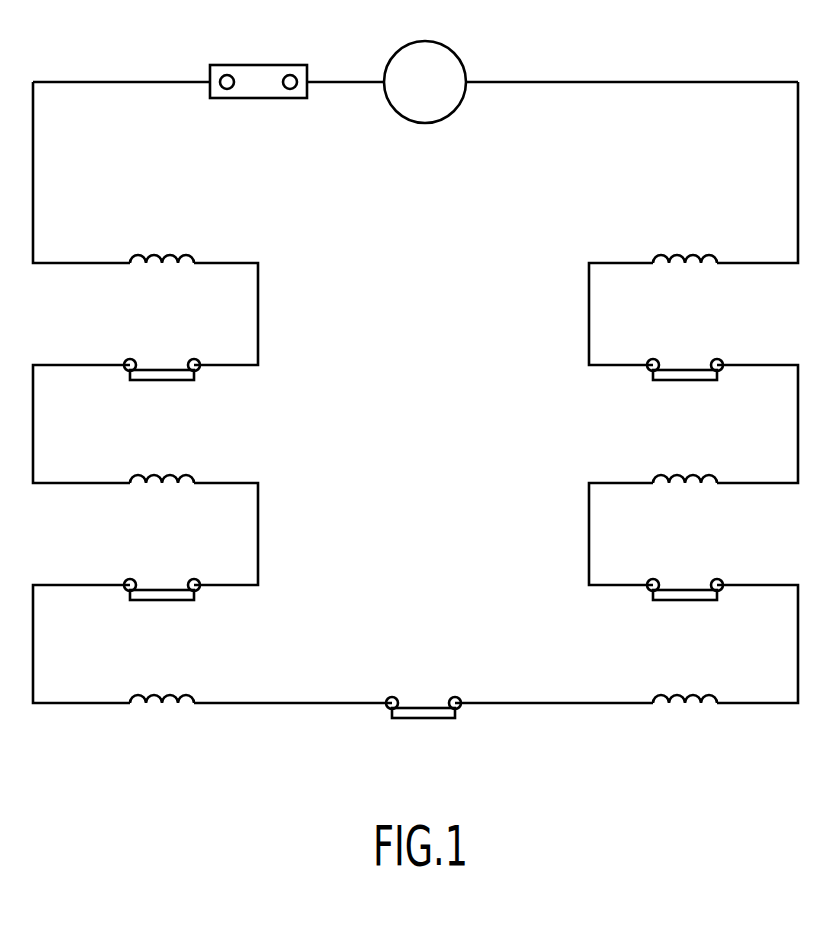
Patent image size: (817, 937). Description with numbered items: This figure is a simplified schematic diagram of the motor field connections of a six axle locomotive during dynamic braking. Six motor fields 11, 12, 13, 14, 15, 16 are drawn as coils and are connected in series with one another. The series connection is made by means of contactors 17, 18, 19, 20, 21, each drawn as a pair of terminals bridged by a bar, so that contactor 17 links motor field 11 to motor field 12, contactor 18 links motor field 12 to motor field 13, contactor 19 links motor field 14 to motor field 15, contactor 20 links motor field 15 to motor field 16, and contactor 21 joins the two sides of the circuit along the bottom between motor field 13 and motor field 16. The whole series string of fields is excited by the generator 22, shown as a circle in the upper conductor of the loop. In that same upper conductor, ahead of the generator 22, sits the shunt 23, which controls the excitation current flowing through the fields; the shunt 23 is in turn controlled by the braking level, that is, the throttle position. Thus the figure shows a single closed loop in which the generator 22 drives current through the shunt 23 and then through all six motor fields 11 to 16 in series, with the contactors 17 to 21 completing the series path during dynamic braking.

The motor field 11 is at (172, 256).
The motor field 12 is at (172, 476).
The motor field 13 is at (170, 696).
The motor field 14 is at (690, 256).
The motor field 15 is at (698, 476).
The motor field 16 is at (712, 696).
The contactor 17 is at (170, 372).
The contactor 18 is at (170, 592).
The contactor 19 is at (698, 372).
The contactor 20 is at (705, 592).
The contactor 21 is at (435, 710).
The generator 22 is at (451, 44).
The shunt 23 is at (283, 65).